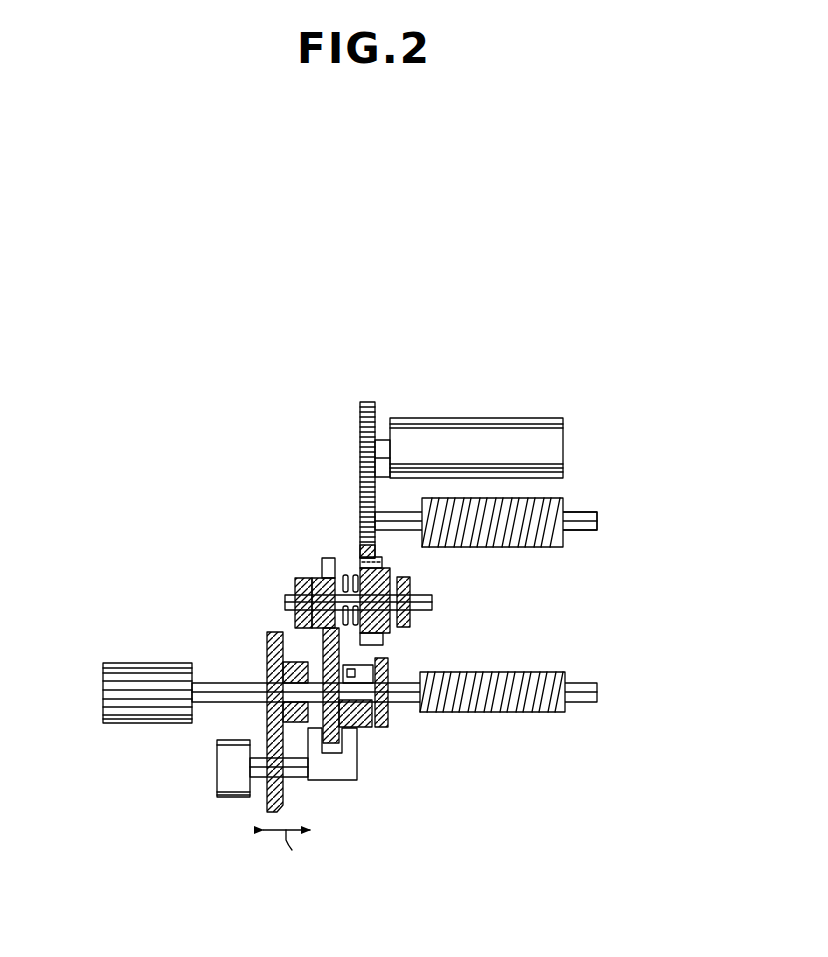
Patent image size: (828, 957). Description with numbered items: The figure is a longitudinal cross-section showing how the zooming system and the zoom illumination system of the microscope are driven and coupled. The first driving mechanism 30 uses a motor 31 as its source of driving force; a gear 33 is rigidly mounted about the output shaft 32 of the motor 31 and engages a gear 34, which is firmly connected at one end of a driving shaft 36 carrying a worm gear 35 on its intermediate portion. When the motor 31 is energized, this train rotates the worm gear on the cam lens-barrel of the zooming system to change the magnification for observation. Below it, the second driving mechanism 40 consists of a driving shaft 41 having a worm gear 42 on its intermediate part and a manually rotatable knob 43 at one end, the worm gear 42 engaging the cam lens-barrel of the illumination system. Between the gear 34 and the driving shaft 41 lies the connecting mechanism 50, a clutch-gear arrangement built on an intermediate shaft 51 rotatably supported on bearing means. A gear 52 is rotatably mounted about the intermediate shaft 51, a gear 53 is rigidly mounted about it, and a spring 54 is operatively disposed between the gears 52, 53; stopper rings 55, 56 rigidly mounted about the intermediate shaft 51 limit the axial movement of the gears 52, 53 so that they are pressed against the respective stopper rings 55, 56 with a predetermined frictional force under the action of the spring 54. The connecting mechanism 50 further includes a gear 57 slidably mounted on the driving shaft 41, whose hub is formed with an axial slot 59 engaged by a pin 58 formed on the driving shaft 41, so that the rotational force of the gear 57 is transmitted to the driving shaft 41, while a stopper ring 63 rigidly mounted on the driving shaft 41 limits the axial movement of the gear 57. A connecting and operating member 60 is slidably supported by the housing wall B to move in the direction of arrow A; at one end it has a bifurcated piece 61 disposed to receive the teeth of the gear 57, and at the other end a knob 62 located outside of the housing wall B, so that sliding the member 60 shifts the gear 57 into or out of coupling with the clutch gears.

The first driving mechanism 30 is at (427, 461).
The motor 31 is at (565, 452).
The output shaft 32 is at (386, 440).
The gear 33 is at (372, 400).
The gear 34 is at (360, 514).
The worm gear 35 is at (556, 547).
The driving shaft 36 is at (600, 520).
The second driving mechanism 40 is at (356, 734).
The driving shaft 41 is at (586, 703).
The worm gear 42 is at (556, 672).
The knob 43 is at (106, 662).
The connecting mechanism 50 is at (304, 536).
The intermediate shaft 51 is at (436, 603).
The gear 52 is at (405, 580).
The gear 53 is at (318, 572).
The spring 54 is at (342, 568).
The stopper ring 55 is at (403, 622).
The stopper ring 56 is at (298, 580).
The gear 57 is at (360, 728).
The pin 58 is at (392, 712).
The axial slot 59 is at (386, 660).
The connecting and operating member 60 is at (312, 780).
The bifurcated piece 61 is at (333, 770).
The knob 62 is at (233, 800).
The stopper ring 63 is at (358, 668).
The arrow A is at (287, 853).
The housing wall B is at (263, 730).